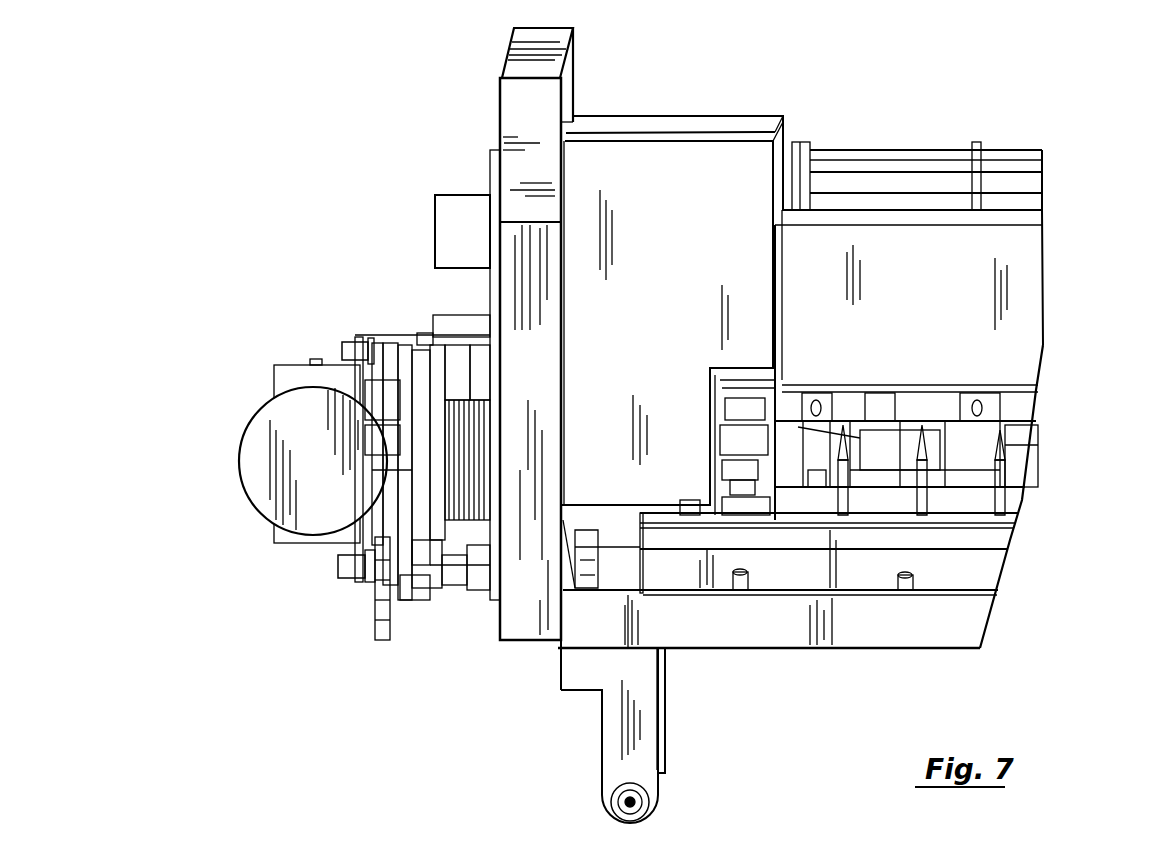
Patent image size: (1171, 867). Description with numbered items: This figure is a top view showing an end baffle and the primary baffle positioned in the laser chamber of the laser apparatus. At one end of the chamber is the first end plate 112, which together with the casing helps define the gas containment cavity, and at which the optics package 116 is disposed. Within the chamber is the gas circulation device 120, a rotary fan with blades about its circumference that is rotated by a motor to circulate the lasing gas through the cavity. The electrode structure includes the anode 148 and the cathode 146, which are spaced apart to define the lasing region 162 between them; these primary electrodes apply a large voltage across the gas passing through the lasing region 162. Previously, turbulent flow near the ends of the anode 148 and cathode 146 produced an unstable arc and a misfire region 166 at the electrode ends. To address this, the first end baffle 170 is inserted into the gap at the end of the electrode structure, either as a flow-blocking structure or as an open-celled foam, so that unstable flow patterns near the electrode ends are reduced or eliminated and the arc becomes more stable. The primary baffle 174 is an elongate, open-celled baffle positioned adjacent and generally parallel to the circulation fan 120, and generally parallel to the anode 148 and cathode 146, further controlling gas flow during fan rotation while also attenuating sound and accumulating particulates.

The first end plate 112 is at (527, 122).
The optics package 116 is at (350, 312).
The gas circulation device 120 is at (905, 210).
The cathode 146 is at (1015, 495).
The anode 148 is at (1015, 437).
The lasing region 162 is at (950, 465).
The misfire region 166 is at (796, 445).
The first end baffle 170 is at (685, 304).
The primary baffle 174 is at (930, 322).